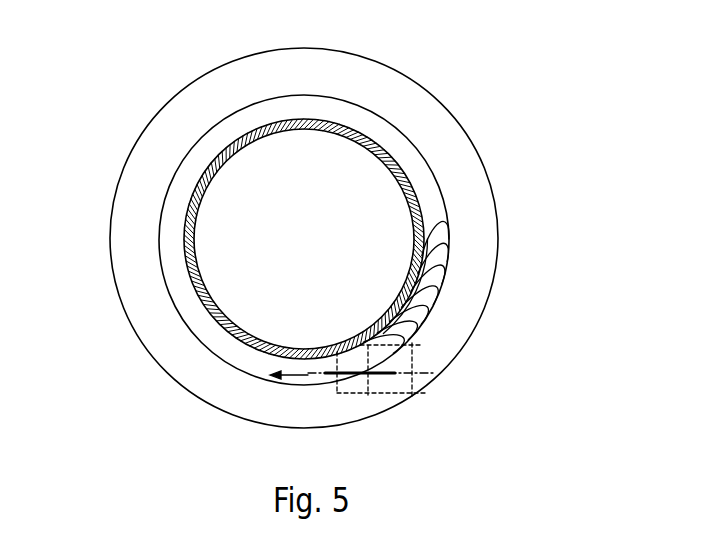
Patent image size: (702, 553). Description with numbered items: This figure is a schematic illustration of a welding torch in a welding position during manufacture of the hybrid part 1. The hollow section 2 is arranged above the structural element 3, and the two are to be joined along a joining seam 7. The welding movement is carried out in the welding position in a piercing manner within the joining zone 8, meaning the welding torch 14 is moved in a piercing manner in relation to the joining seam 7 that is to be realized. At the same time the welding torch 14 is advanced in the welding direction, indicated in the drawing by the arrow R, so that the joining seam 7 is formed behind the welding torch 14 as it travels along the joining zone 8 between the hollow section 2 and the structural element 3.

The hybrid part 1 is at (492, 76).
The hollow section 2 is at (187, 233).
The structural element 3 is at (150, 192).
The joining seam 7 is at (430, 290).
The joining zone 8 is at (187, 300).
The welding torch 14 is at (395, 388).
The direction of rotation R is at (292, 377).